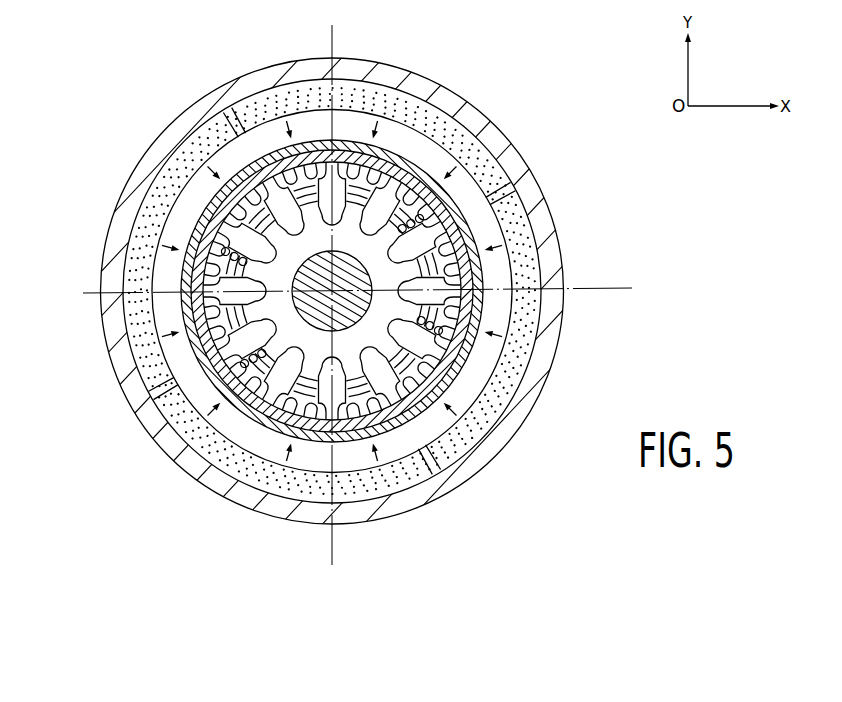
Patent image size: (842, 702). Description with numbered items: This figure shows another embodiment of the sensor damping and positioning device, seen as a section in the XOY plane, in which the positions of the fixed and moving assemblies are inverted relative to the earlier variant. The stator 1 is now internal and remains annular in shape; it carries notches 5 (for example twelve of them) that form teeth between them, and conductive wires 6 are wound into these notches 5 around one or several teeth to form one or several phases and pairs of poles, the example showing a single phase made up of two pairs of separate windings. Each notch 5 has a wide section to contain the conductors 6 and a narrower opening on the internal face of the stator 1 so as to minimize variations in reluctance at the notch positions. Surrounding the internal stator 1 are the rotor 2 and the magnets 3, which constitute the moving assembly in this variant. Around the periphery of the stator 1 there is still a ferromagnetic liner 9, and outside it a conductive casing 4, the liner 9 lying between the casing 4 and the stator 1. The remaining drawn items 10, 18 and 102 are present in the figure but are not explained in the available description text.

The stator 1 is at (283, 270).
The rotor 2 is at (271, 80).
The magnets 3 is at (183, 163).
The conductive casing 4 is at (417, 164).
The notches 5 is at (403, 432).
The conductive wires 6 is at (362, 348).
The ferromagnetic liner 9 is at (480, 214).
The magnet ring inner surface 10 is at (387, 130).
The coil 18 is at (291, 433).
The shaft 102 is at (352, 274).